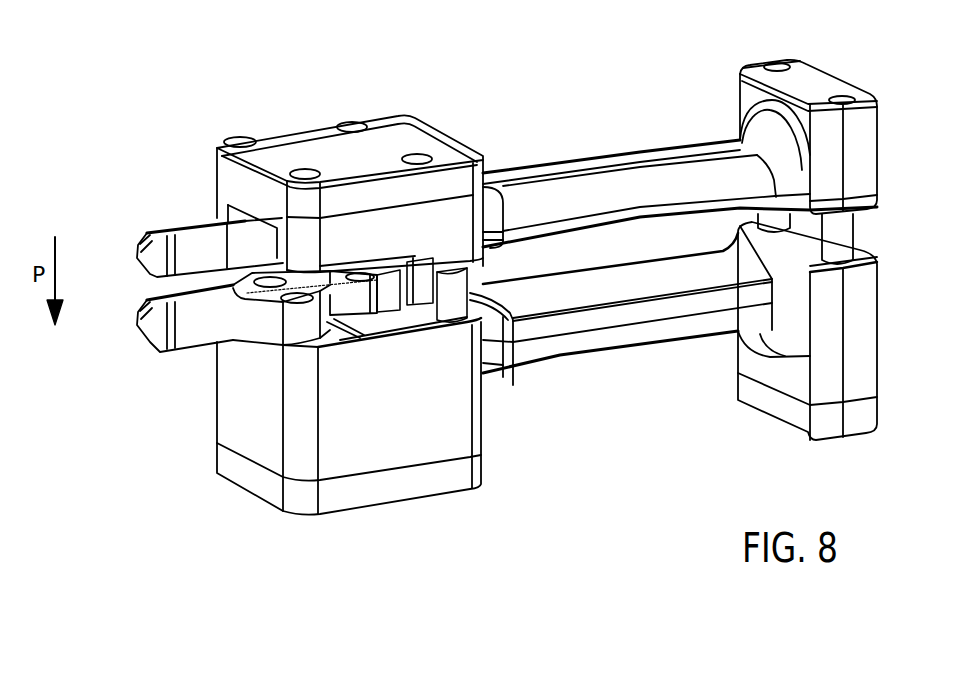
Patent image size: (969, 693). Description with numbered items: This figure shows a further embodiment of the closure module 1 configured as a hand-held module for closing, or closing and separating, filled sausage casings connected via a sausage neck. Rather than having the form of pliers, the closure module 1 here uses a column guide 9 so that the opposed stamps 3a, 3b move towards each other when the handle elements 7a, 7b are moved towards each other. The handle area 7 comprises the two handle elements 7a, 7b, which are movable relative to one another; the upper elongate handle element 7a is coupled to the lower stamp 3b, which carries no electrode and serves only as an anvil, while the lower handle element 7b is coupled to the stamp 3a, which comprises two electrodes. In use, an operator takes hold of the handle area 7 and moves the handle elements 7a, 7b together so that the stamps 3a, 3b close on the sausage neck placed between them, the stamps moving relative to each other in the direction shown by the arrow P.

The closure module 1 is at (497, 96).
The stamp 3a is at (138, 235).
The lower stamp 3b is at (145, 351).
The handle area 7 is at (659, 146).
The upper handle element 7a is at (587, 182).
The lower handle element 7b is at (660, 313).
The column guide 9 is at (845, 233).